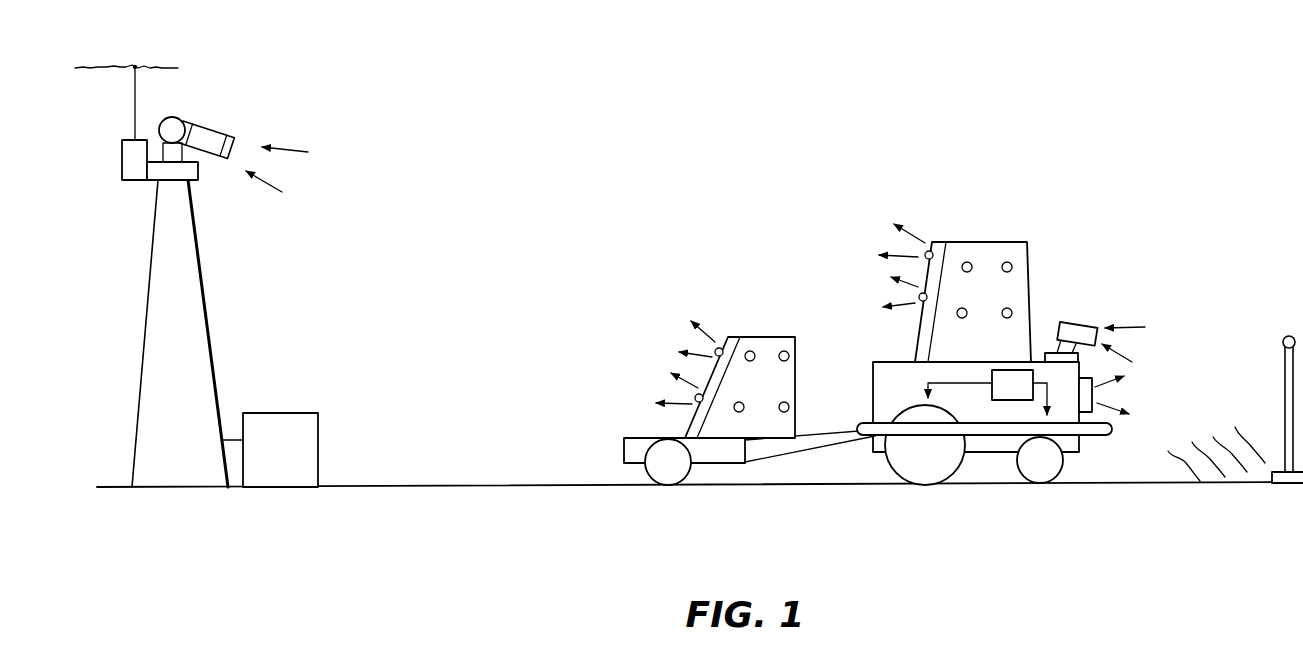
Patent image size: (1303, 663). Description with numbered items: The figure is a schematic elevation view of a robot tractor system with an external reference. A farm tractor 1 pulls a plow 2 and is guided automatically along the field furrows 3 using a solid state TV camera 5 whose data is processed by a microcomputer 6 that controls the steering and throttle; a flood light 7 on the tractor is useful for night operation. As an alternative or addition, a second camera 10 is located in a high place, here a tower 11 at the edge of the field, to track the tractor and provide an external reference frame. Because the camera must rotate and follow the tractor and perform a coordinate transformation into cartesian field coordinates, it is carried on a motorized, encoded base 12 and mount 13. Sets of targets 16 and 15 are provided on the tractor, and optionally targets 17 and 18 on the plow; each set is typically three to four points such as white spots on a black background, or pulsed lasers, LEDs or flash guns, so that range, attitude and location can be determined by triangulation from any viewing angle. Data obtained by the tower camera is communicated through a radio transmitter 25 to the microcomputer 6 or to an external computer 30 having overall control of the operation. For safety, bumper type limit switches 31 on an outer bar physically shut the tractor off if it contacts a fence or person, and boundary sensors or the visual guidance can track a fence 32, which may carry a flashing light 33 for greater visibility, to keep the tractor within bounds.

The farm tractor 1 is at (988, 453).
The plow 2 is at (746, 428).
The heat source / hot spot on ground 3 is at (1197, 477).
The solid state TV camera 5 is at (1087, 322).
The microcomputer 6 is at (1022, 397).
The flood light 7 is at (1120, 395).
The second camera 10 is at (223, 130).
The tower 11 is at (148, 296).
The motorized encoded base 12 is at (198, 172).
The mount 13 is at (173, 117).
The targets 15 is at (928, 247).
The targets 16 is at (988, 242).
The targets 17 is at (720, 340).
The targets 18 is at (778, 337).
The radio transmitter 25 is at (122, 163).
The external computer 30 is at (290, 466).
The bumper type limit switches 31 is at (875, 433).
The fence 32 is at (1285, 452).
The flashing light 33 is at (1286, 335).